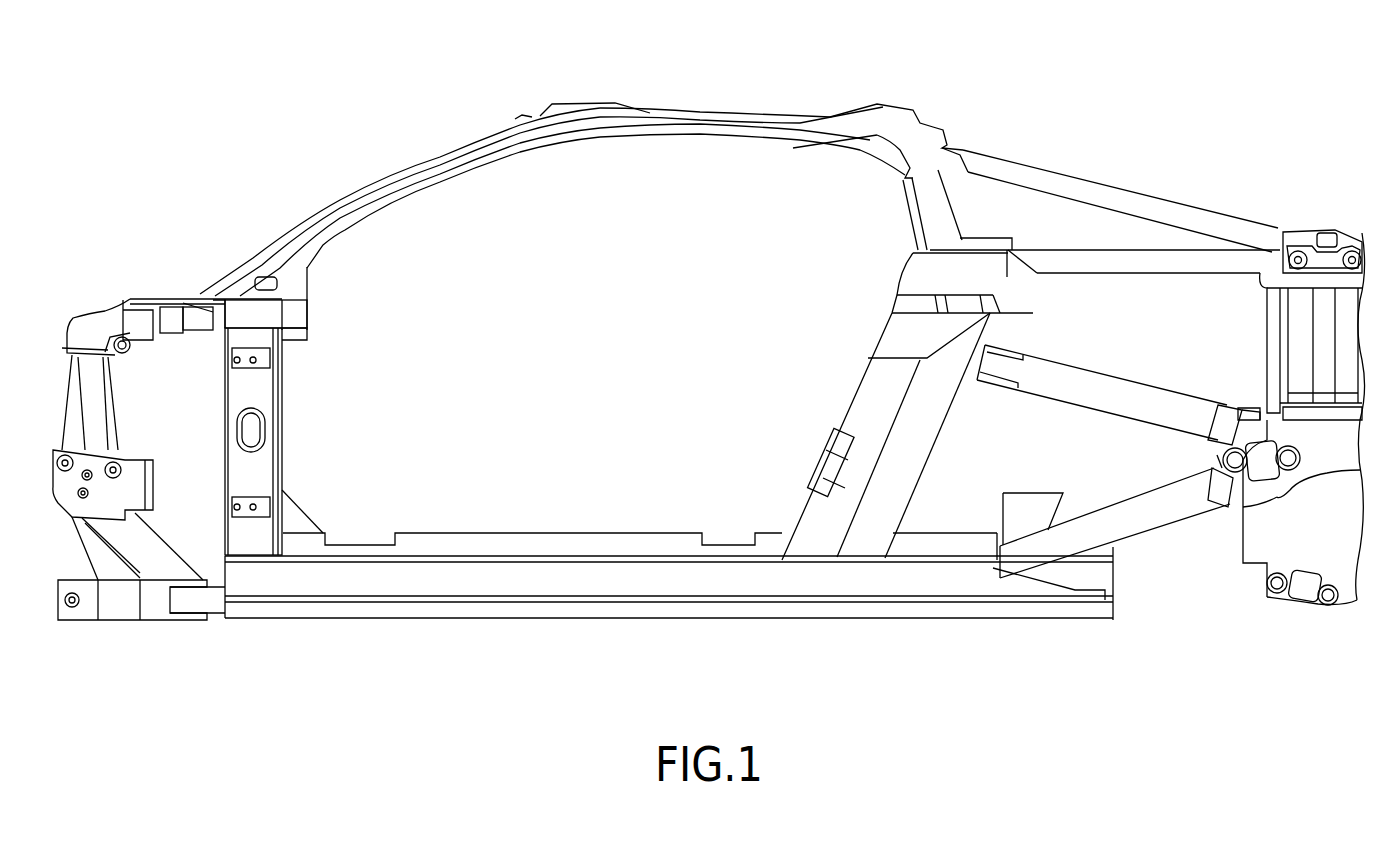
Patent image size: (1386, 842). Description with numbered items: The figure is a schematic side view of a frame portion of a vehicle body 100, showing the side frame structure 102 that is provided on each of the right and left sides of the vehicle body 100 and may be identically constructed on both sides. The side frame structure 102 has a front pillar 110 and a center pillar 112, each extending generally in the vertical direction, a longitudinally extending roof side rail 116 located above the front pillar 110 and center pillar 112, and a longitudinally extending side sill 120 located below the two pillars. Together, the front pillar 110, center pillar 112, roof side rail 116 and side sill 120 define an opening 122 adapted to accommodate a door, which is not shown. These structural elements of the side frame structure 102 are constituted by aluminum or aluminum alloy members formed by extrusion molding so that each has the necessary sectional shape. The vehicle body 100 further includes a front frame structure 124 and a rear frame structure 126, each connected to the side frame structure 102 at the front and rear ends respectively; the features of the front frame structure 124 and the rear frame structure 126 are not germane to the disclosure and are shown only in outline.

The vehicle body 100 is at (1076, 82).
The side frame structure 102 is at (343, 128).
The front pillar 110 is at (287, 428).
The center pillar 112 is at (847, 404).
The roof side rail 116 is at (590, 143).
The side sill 120 is at (540, 613).
The opening 122 is at (728, 165).
The front frame structure 124 is at (122, 645).
The rear frame structure 126 is at (1188, 592).